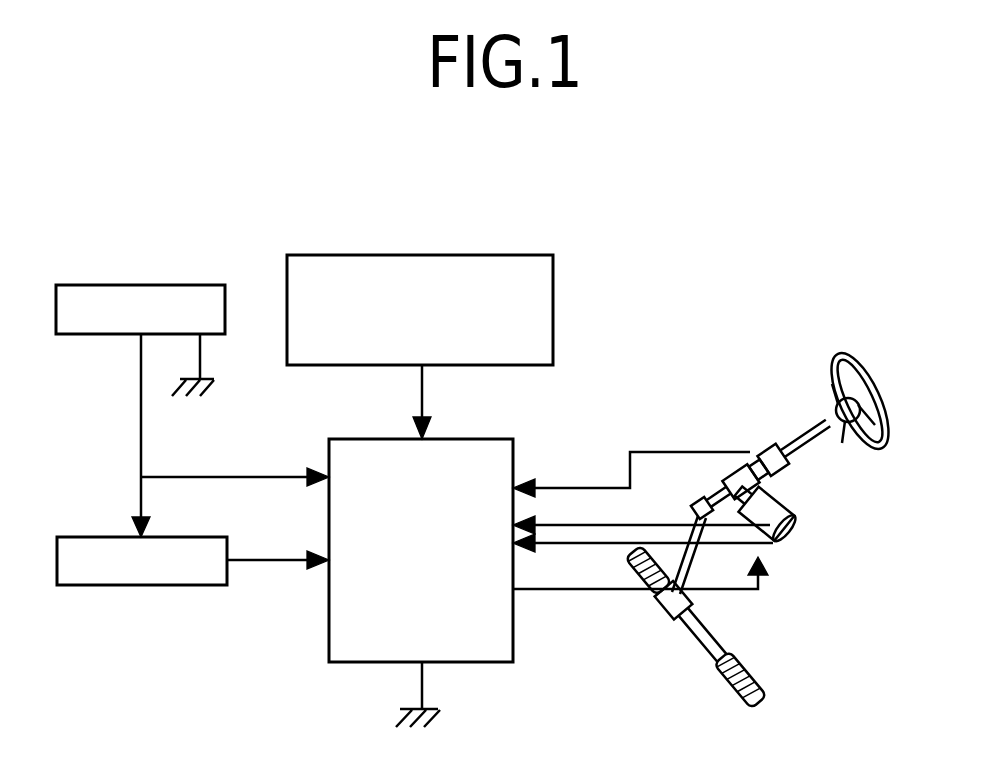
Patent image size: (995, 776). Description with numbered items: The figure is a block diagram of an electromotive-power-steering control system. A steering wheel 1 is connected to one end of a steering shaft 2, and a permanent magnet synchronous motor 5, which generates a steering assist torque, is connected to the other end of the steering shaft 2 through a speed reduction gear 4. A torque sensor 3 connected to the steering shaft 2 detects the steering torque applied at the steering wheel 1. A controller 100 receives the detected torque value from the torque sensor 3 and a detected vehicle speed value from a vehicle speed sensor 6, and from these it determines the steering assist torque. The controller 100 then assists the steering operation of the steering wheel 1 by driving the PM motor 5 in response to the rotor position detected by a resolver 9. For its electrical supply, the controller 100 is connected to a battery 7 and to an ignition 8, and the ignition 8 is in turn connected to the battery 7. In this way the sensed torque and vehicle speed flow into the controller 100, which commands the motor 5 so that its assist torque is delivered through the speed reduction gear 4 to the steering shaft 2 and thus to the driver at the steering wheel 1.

The steering wheel 1 is at (843, 352).
The steering shaft 2 is at (782, 440).
The torque sensor 3 is at (755, 447).
The speed reduction gear 4 is at (715, 473).
The permanent magnet synchronous motor 5 is at (790, 500).
The vehicle speed sensor 6 is at (383, 253).
The battery 7 is at (122, 285).
The ignition 8 is at (103, 587).
The resolver 9 is at (778, 543).
The controller 100 is at (477, 438).